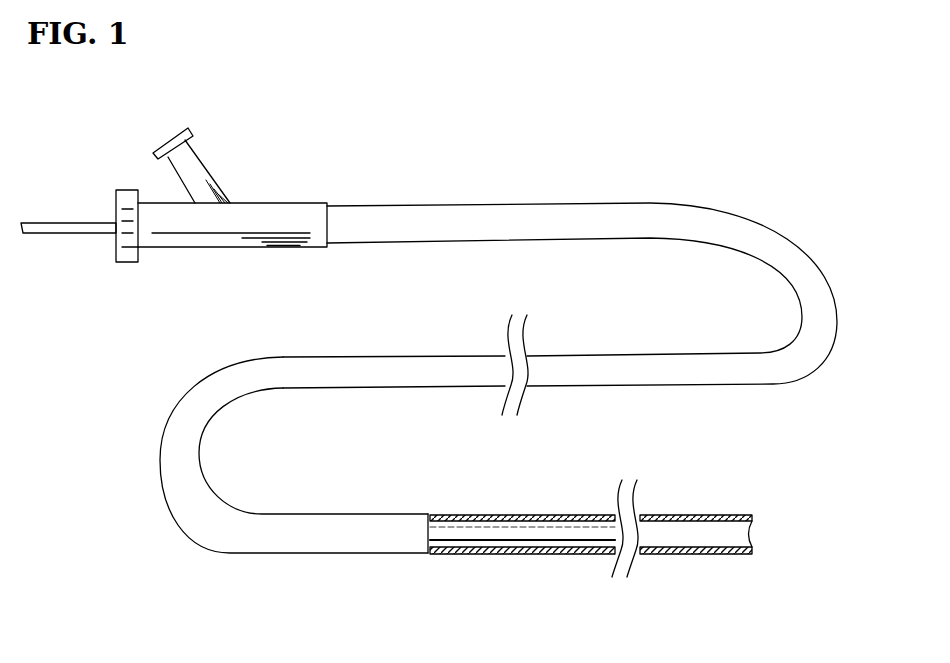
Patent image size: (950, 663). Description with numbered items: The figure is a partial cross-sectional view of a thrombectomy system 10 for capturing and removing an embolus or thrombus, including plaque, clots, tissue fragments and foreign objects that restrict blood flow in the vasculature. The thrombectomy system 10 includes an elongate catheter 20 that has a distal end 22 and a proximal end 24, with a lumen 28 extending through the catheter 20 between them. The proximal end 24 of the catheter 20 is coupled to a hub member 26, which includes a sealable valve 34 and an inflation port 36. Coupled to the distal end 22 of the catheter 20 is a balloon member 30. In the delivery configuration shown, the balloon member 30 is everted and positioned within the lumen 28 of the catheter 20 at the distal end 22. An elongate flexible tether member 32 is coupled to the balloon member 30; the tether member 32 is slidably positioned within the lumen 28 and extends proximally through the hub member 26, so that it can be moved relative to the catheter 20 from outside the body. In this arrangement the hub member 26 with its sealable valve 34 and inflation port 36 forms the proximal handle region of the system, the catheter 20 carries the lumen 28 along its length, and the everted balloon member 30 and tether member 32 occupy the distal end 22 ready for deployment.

The thrombectomy system 10 is at (582, 144).
The elongate catheter 20 is at (403, 513).
The distal end 22 is at (680, 512).
The proximal end 24 is at (422, 212).
The hub member 26 is at (227, 243).
The lumen 28 is at (435, 545).
The balloon member 30 is at (687, 557).
The elongate flexible tether member 32 is at (73, 233).
The sealable valve 34 is at (137, 244).
The inflation port 36 is at (202, 160).